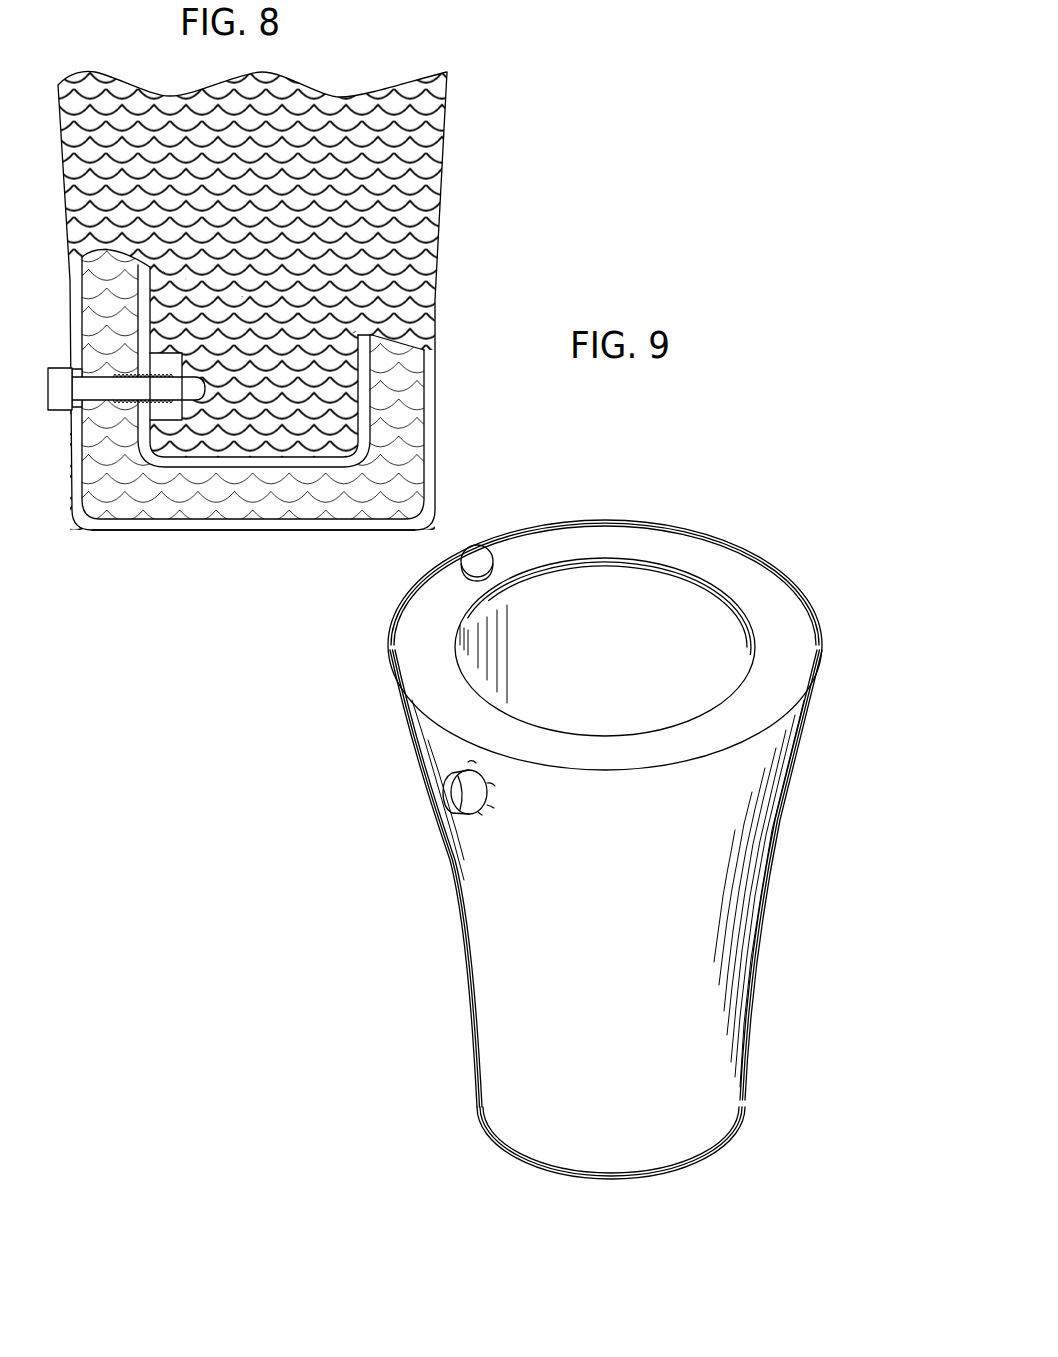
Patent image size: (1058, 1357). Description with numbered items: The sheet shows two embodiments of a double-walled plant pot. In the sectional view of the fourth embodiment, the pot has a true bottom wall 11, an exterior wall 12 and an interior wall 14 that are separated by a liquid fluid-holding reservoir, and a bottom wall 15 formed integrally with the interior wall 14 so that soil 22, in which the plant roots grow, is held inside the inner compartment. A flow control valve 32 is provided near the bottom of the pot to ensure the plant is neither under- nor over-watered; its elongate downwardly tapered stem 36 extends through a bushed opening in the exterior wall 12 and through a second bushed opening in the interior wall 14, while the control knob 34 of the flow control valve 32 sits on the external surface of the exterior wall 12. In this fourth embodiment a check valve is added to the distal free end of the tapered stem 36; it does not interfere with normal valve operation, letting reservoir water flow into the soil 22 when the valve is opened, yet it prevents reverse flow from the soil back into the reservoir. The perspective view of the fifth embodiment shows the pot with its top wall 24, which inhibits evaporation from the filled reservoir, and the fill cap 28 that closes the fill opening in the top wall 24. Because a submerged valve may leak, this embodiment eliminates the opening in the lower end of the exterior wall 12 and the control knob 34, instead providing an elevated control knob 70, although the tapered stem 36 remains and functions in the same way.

In FIG. 8, the true bottom wall 11 is at (223, 531).
In FIG. 9, the true bottom wall 11 is at (520, 1165).
In FIG. 8, the exterior wall 12 is at (436, 396).
In FIG. 9, the exterior wall 12 is at (780, 818).
In FIG. 8, the interior wall 14 is at (358, 407).
In FIG. 9, the interior wall 14 is at (707, 633).
In FIG. 8, the bottom wall 15 is at (265, 468).
In FIG. 8, the soil 22 is at (253, 320).
In FIG. 9, the soil 22 is at (580, 623).
In FIG. 9, the top wall 24 is at (762, 590).
In FIG. 9, the fill cap 28 is at (483, 546).
In FIG. 8, the flow control valve 32 is at (118, 379).
In FIG. 8, the control knob 34 is at (48, 379).
In FIG. 8, the elongate tapered stem 36 is at (118, 373).
In FIG. 9, the elevated control knob 70 is at (454, 787).